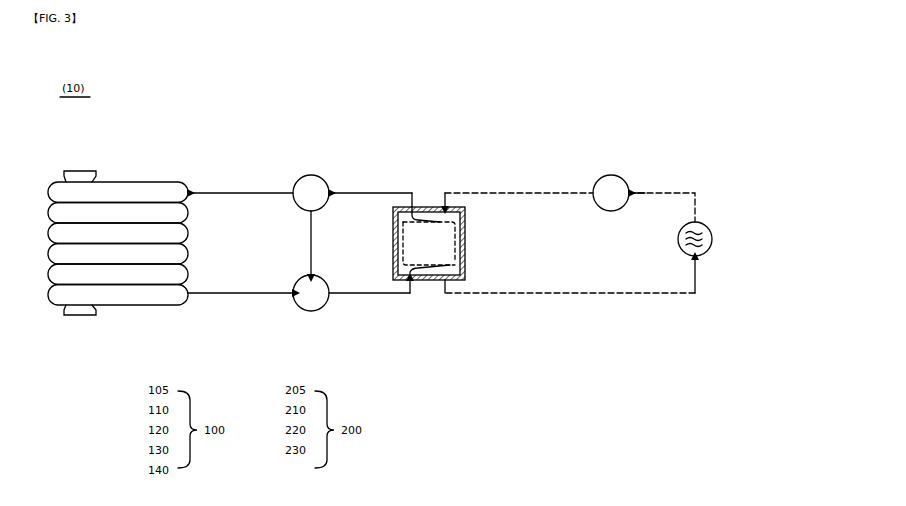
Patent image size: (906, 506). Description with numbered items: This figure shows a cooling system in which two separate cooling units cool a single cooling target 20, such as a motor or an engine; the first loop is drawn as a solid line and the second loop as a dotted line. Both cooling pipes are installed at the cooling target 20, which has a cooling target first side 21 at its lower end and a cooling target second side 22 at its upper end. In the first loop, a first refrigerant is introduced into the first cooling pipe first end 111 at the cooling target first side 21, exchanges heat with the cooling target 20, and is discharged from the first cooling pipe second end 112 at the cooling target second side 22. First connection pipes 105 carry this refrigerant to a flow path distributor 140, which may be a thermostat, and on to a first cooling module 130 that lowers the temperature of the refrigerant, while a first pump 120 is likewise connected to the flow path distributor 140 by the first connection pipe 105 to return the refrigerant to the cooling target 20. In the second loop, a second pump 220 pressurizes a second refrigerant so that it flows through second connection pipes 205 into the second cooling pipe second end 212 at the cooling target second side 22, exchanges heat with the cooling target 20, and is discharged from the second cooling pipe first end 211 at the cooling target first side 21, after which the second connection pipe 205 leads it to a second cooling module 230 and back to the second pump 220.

The cooling target 20 is at (465, 241).
The cooling target first side 21 is at (445, 280).
The cooling target second side 22 is at (432, 207).
The first connection pipe 105 is at (238, 193).
The first cooling pipe first end 111 is at (411, 280).
The first cooling pipe second end 112 is at (413, 207).
The first pump 120 is at (311, 311).
The first cooling module 130 is at (116, 182).
The flow path distributor 140 is at (311, 175).
The second connection pipe 205 is at (520, 193).
The second cooling pipe first end 211 is at (466, 272).
The second cooling pipe second end 212 is at (466, 214).
The second pump 220 is at (611, 175).
The second cooling module 230 is at (712, 239).